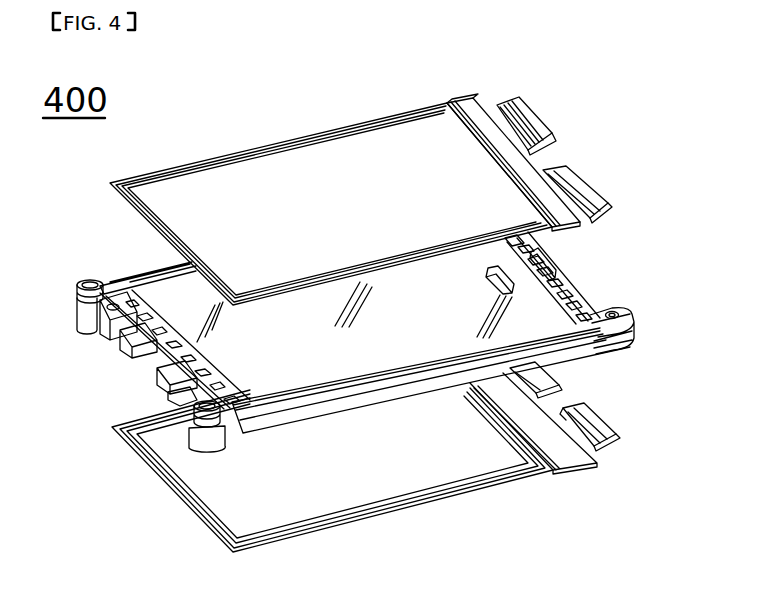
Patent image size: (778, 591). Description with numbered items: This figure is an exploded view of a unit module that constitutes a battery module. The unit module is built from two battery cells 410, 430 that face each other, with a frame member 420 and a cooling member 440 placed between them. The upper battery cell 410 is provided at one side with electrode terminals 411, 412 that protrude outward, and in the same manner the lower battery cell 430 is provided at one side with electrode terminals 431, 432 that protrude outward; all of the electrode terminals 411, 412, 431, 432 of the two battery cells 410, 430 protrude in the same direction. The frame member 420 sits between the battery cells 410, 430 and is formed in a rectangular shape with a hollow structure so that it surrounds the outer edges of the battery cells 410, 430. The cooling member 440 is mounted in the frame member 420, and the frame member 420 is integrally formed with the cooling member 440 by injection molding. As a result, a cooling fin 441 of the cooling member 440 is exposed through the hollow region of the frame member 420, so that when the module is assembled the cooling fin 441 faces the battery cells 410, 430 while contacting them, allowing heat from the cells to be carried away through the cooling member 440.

The battery cell 410 is at (313, 163).
The electrode terminal 411 is at (521, 114).
The electrode terminal 412 is at (585, 190).
The frame member 420 is at (570, 307).
The battery cell 430 is at (258, 503).
The electrode terminal 431 is at (541, 368).
The electrode terminal 432 is at (596, 430).
The cooling member 440 is at (524, 314).
The cooling fin 441 is at (177, 313).